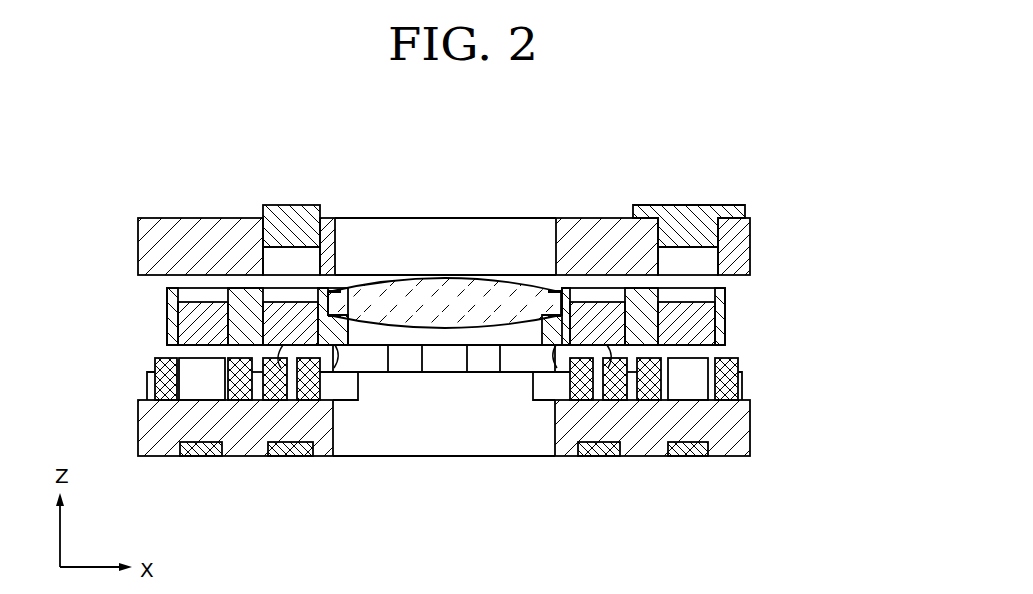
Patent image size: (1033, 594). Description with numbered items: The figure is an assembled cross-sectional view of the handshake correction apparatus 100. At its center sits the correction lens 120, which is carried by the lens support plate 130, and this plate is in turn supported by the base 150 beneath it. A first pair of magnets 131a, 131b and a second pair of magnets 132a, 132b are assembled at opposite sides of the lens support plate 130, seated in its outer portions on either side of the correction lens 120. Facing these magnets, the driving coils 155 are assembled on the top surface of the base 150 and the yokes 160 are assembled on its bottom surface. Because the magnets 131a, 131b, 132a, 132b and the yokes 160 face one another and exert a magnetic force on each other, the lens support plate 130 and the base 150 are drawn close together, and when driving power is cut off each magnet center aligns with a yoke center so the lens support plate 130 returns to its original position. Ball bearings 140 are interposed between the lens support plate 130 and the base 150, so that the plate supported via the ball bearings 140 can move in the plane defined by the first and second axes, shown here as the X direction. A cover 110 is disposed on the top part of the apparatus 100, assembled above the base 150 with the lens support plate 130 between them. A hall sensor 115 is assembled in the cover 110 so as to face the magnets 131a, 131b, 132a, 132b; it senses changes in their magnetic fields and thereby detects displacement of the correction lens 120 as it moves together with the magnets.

The handshake correction apparatus 100 is at (692, 184).
The cover 110 is at (745, 249).
The hall sensor 115 is at (743, 207).
The correction lens 120 is at (445, 297).
The lens support plate 130 is at (725, 297).
The first pair magnet 131a is at (277, 312).
The first pair magnet 131b is at (602, 318).
The second pair magnet 132a is at (186, 328).
The second pair magnet 132b is at (697, 330).
The ball bearings 140 is at (565, 363).
The base 150 is at (740, 428).
The driving coils 155 is at (730, 381).
The yokes 160 is at (690, 457).